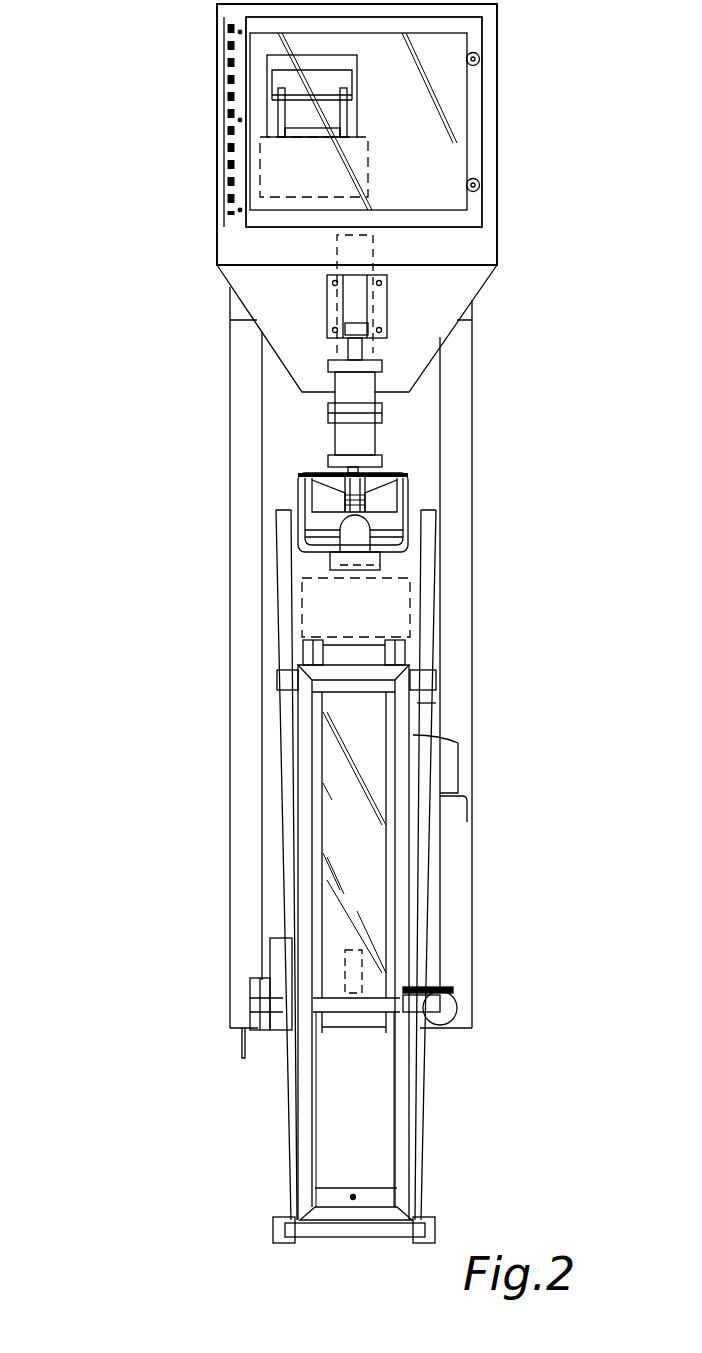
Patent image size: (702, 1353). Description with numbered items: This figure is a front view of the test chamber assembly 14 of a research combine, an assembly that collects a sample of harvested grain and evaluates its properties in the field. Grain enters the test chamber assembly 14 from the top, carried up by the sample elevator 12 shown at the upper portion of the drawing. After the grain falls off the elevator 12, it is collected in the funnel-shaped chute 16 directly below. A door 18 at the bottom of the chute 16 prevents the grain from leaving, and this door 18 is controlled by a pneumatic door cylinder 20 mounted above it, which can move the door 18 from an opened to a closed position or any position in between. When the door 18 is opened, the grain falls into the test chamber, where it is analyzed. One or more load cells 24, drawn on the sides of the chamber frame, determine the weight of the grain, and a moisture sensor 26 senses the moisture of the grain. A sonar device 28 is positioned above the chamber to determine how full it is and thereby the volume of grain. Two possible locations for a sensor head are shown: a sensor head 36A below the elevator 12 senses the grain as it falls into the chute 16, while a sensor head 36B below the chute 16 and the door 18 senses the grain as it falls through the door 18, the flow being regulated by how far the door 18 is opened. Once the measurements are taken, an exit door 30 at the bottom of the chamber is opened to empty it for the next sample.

The test chamber assembly 14 is at (175, 53).
The sample elevator 12 is at (331, 78).
The chute 16 is at (462, 247).
The sensor head 36A is at (352, 154).
The pneumatic door cylinder 20 is at (360, 447).
The door 18 is at (398, 525).
The sonar device 28 is at (333, 565).
The sensor head 36B is at (397, 617).
The load cells 24 is at (448, 768).
The moisture sensor 26 is at (352, 970).
The exit door 30 is at (310, 1238).